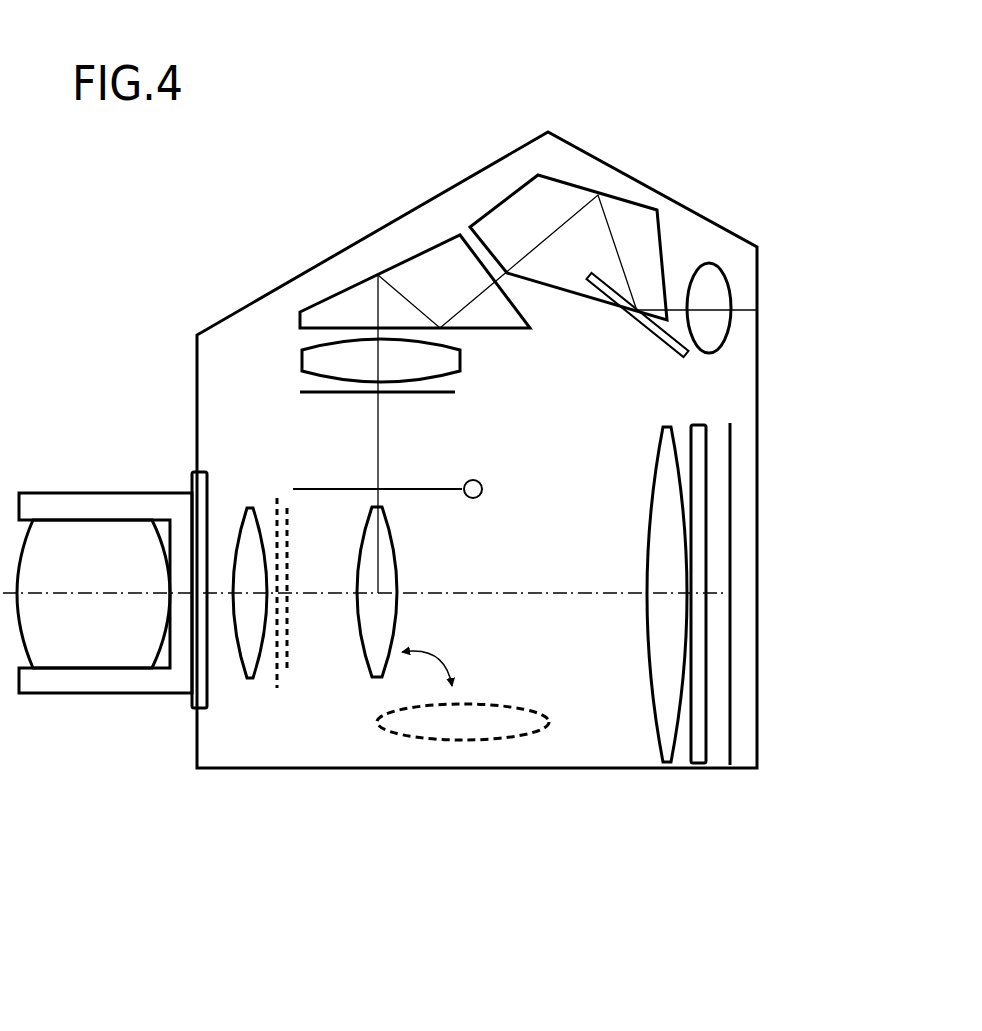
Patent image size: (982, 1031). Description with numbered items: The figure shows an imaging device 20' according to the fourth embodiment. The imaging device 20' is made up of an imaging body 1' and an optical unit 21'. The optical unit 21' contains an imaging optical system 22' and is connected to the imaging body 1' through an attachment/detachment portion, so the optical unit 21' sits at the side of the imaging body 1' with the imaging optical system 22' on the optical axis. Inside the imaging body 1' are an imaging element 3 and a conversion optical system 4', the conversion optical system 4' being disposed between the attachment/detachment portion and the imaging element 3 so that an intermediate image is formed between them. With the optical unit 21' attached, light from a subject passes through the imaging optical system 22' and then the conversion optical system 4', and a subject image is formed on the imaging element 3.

The imaging device 20' is at (501, 393).
The optical unit 21' is at (105, 494).
The imaging optical system 22' is at (93, 667).
The imaging body 1' is at (769, 553).
The imaging element 3 is at (730, 697).
The conversion optical system 4' is at (477, 785).